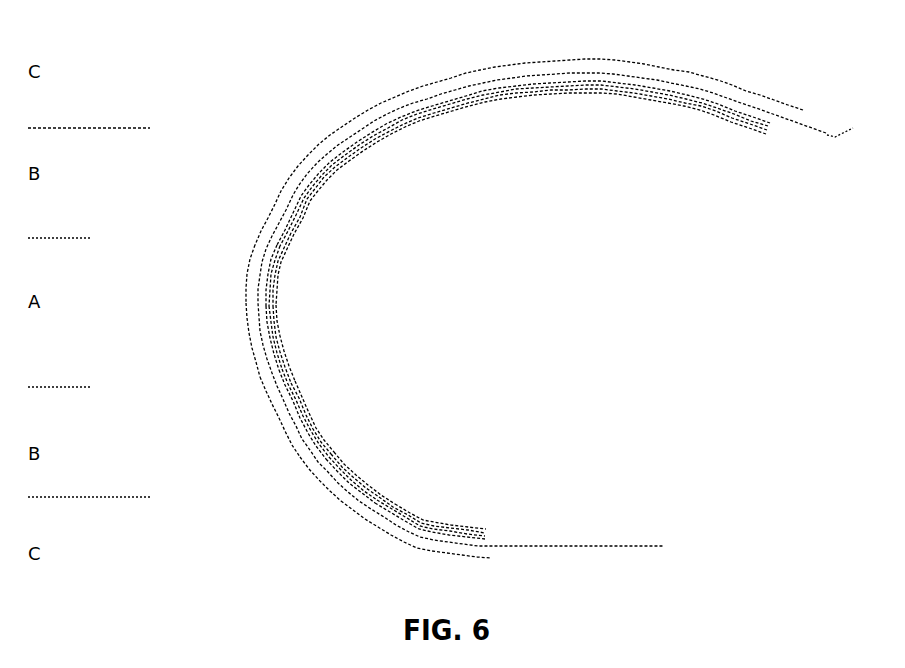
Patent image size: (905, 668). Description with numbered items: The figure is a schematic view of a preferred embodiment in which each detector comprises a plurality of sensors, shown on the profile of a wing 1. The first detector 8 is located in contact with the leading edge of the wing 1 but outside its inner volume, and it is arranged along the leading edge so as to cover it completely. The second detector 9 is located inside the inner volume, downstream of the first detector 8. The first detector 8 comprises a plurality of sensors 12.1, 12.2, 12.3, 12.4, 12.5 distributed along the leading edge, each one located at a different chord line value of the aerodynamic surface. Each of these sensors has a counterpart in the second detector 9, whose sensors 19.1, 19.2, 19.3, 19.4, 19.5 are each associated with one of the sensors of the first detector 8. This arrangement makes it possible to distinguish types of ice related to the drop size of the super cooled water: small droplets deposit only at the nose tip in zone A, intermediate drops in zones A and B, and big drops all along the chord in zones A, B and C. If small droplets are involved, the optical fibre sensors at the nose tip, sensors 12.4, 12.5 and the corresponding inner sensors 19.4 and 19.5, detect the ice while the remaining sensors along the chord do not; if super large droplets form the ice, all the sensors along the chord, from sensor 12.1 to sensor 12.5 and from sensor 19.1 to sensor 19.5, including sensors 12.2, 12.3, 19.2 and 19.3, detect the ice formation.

The wing 1 is at (527, 294).
The first detector 8 is at (511, 294).
The second detector 9 is at (518, 310).
The sensor 12.1 is at (398, 529).
The sensor 12.2 is at (299, 479).
The sensor 12.3 is at (260, 417).
The sensor 12.4 is at (231, 340).
The sensor 12.5 is at (228, 274).
The sensor 19.1 is at (428, 502).
The sensor 19.2 is at (360, 465).
The sensor 19.3 is at (312, 414).
The sensor 19.4 is at (298, 344).
The sensor 19.5 is at (298, 269).